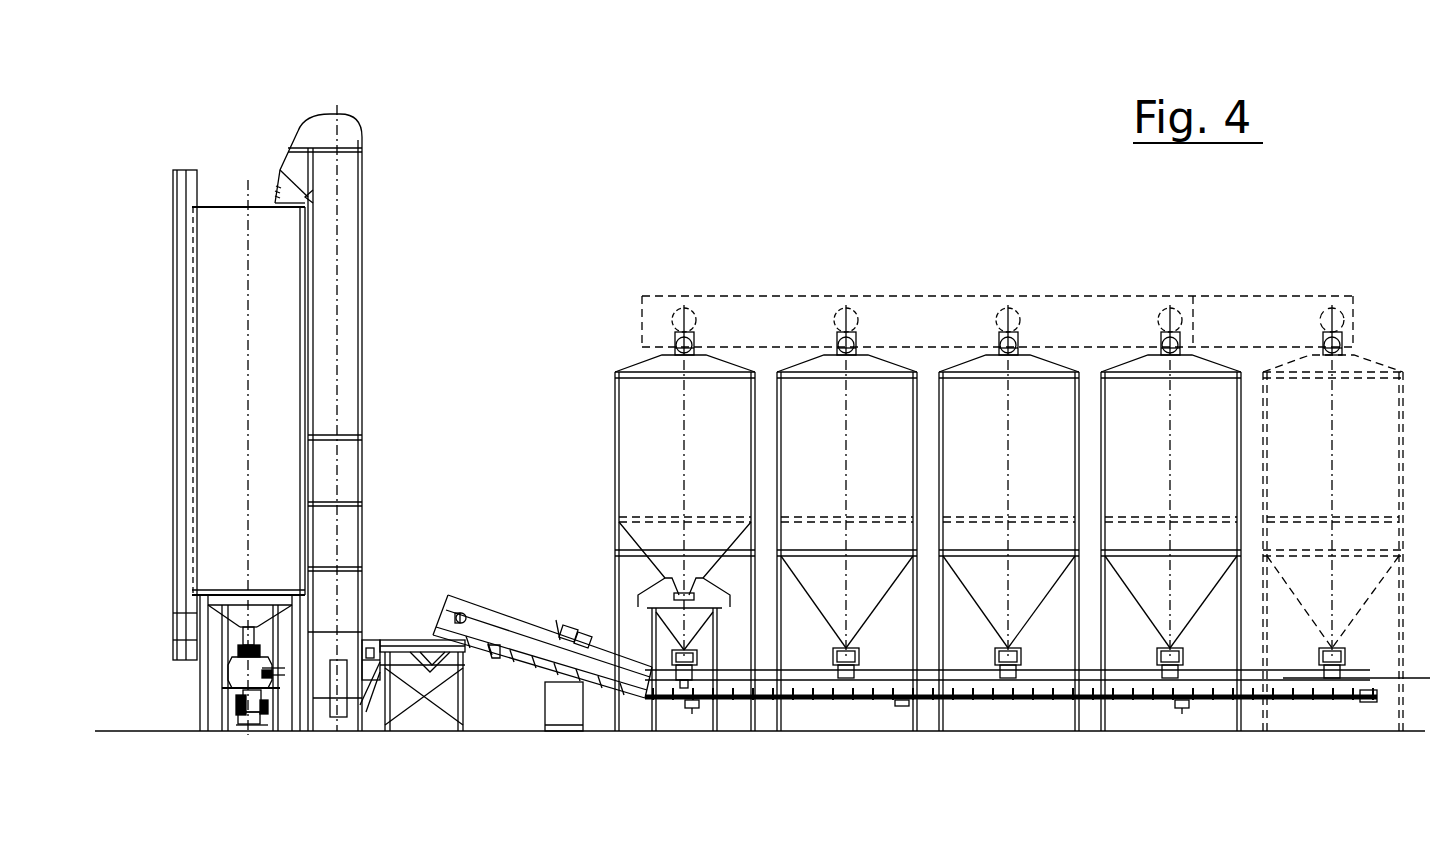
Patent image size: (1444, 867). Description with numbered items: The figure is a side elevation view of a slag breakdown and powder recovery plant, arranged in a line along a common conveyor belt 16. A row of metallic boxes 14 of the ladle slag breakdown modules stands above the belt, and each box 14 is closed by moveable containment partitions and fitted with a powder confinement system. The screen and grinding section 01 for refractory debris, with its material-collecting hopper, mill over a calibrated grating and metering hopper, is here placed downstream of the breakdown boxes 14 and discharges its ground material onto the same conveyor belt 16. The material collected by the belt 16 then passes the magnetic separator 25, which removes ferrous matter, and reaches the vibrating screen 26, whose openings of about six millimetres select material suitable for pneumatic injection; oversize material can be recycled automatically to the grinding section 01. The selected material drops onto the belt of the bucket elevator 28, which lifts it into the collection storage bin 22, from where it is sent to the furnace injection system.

The screen and grinding section 01 is at (637, 420).
The metallic box 14 is at (1128, 397).
The common conveyor belt 16 is at (972, 695).
The collection storage bin 22 is at (240, 305).
The magnetic separator 25 is at (565, 623).
The vibrating screen 26 is at (465, 668).
The bucket elevator 28 is at (345, 302).